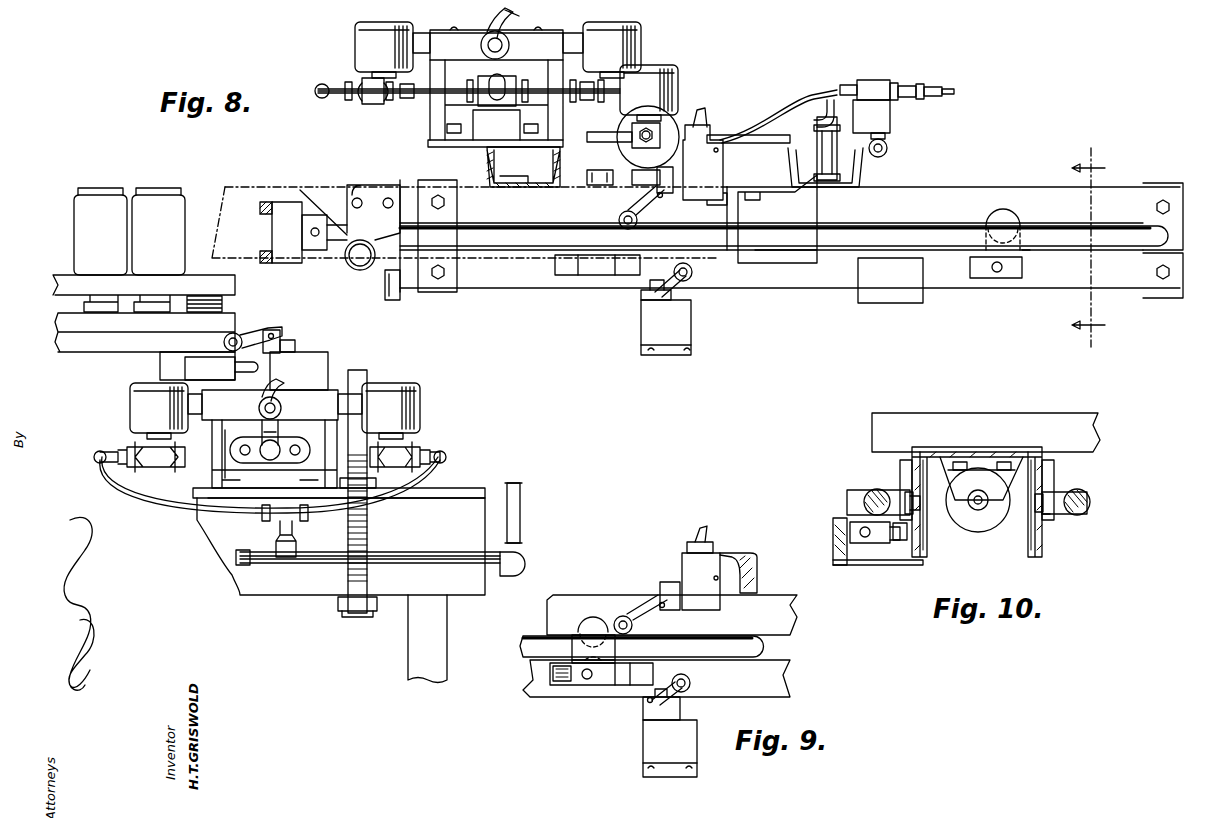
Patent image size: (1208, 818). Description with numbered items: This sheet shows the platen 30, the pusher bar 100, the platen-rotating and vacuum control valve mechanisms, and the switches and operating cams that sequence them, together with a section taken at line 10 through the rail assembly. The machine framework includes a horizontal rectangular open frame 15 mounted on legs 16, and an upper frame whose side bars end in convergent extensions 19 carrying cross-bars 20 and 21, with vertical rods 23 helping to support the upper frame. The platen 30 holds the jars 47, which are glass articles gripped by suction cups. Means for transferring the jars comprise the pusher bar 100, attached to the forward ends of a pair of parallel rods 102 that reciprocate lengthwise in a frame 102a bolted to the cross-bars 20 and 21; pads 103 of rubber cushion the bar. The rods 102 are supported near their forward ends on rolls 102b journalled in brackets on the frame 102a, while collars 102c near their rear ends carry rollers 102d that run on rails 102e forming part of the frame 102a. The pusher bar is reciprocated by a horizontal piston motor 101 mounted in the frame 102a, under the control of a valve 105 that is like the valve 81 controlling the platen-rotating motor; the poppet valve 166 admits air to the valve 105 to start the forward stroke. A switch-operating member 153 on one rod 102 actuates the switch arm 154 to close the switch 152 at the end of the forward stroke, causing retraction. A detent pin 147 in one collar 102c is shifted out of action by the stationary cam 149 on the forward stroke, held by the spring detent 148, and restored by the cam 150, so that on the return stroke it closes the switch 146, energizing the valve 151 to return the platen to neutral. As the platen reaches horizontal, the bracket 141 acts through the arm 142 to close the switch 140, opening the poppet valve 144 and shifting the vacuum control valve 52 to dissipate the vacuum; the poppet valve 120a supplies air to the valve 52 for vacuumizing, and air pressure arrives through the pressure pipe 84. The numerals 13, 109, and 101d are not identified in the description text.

In FIG. 8, the motor 13 is at (373, 37).
In FIG. 8, the valve 81 is at (535, 72).
In FIG. 8, the valve 151 is at (622, 38).
In FIG. 8, the poppet valve 166 is at (665, 90).
In FIG. 8, the valve 105 is at (670, 127).
In FIG. 8, the switch 152 is at (708, 153).
In FIG. 9, the switch 152 is at (692, 563).
In FIG. 8, the cross-bar 21 is at (865, 165).
In FIG. 10, the cross-bar 21 is at (1073, 402).
In FIG. 8, the rails 102e is at (960, 166).
In FIG. 9, the rails 102e is at (800, 670).
In FIG. 10, the rails 102e is at (1073, 525).
In FIG. 8, the rollers 102d is at (1003, 217).
In FIG. 9, the rollers 102d is at (593, 630).
In FIG. 10, the rollers 102d is at (1003, 436).
In FIG. 8, the section line 10 is at (1099, 247).
In FIG. 8, the switch-operating member 153 is at (1132, 228).
In FIG. 9, the switch-operating member 153 is at (727, 636).
In FIG. 10, the switch-operating member 153 is at (860, 490).
In FIG. 8, the articles 47 is at (150, 200).
In FIG. 8, the pusher bar 100 is at (283, 202).
In FIG. 8, the frame 102a is at (340, 198).
In FIG. 8, the cross-bar 20 is at (485, 162).
In FIG. 8, the pads or strips 103 is at (262, 254).
In FIG. 8, the convergent extensions 19 is at (805, 225).
In FIG. 8, the platen 30 is at (232, 302).
In FIG. 8, the rolls 102b is at (347, 263).
In FIG. 8, the rods 102 is at (520, 236).
In FIG. 9, the rods 102 is at (542, 630).
In FIG. 10, the rods 102 is at (1083, 492).
In FIG. 8, the piston motor 101 is at (401, 260).
In FIG. 10, the piston motor 101 is at (975, 523).
In FIG. 8, the stationary cam 149 is at (870, 278).
In FIG. 10, the stationary cam 149 is at (842, 518).
In FIG. 8, the spring detent 148 is at (1022, 270).
In FIG. 9, the spring detent 148 is at (563, 690).
In FIG. 10, the spring detent 148 is at (865, 538).
In FIG. 8, the collars 102c is at (1018, 253).
In FIG. 9, the collars 102c is at (573, 663).
In FIG. 10, the collars 102c is at (1053, 490).
In FIG. 8, the detent pin 147 is at (995, 272).
In FIG. 9, the detent pin 147 is at (587, 680).
In FIG. 10, the detent pin 147 is at (892, 540).
In FIG. 8, the cam 150 is at (595, 278).
In FIG. 9, the cam 150 is at (650, 673).
In FIG. 10, the cam 150 is at (907, 545).
In FIG. 8, the switch 146 is at (655, 330).
In FIG. 9, the switch 146 is at (667, 737).
In FIG. 8, the switch arm 154 is at (650, 207).
In FIG. 9, the switch arm 154 is at (647, 603).
In FIG. 8, the arm 142 is at (240, 340).
In FIG. 8, the switch 140 is at (308, 358).
In FIG. 8, the bracket 141 is at (173, 358).
In FIG. 8, the plunger 109 is at (233, 372).
In FIG. 8, the poppet valve 144 is at (138, 397).
In FIG. 8, the vertical rods 23 is at (362, 382).
In FIG. 8, the poppet valve 120a is at (393, 397).
In FIG. 8, the vacuum control valve 52 is at (223, 450).
In FIG. 8, the horizontal rectangular open frame 15 is at (468, 490).
In FIG. 8, the pressure pipe 84 is at (521, 500).
In FIG. 8, the legs 16 is at (437, 623).
In FIG. 10, the roller axle 101d is at (1023, 527).